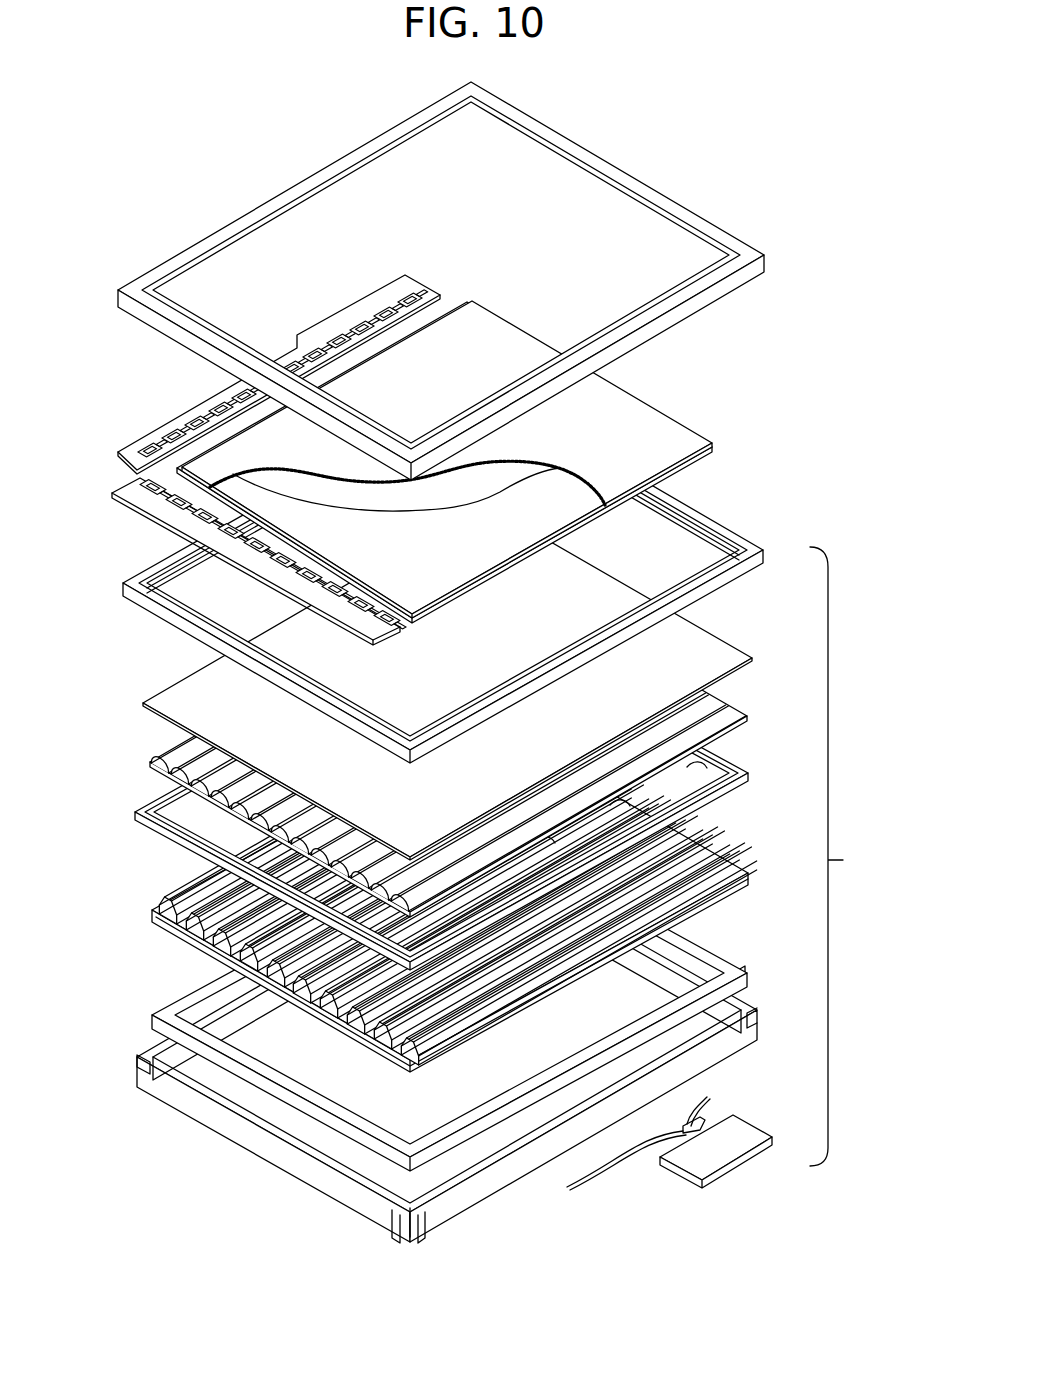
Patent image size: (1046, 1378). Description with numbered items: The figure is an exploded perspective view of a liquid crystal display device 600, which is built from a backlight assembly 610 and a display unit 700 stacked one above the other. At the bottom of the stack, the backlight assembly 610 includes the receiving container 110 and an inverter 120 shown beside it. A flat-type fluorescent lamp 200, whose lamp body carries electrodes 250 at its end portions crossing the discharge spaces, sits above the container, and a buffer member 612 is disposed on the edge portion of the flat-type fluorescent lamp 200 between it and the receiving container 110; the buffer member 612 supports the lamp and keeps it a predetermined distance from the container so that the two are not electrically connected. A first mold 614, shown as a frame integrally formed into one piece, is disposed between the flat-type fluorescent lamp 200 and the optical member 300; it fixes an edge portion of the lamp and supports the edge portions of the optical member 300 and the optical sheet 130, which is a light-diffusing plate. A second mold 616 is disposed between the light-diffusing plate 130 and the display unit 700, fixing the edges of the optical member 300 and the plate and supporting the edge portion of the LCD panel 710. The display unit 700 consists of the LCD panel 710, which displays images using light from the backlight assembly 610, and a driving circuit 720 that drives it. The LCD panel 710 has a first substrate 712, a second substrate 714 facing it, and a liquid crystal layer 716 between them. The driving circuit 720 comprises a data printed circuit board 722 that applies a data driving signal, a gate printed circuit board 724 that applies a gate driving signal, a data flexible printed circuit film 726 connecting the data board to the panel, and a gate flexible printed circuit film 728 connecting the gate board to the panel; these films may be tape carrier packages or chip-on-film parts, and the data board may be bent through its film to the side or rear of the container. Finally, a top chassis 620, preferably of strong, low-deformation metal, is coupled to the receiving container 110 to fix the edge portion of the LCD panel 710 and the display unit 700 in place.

The liquid crystal display device 600 is at (315, 139).
The top chassis 620 is at (172, 240).
The display unit 700 is at (250, 437).
The driving circuit 720 is at (250, 437).
The data printed circuit board 722 is at (313, 333).
The gate printed circuit board 724 is at (140, 500).
The data flexible printed circuit film 726 is at (368, 327).
The gate flexible printed circuit film 728 is at (178, 490).
The LCD panel 710 is at (493, 462).
The first substrate 712 is at (513, 550).
The second substrate 714 is at (627, 482).
The liquid crystal layer 716 is at (513, 482).
The second mold 616 is at (133, 626).
The optical sheet 130 is at (750, 644).
The optical member 300 is at (160, 740).
The first mold 614 is at (135, 826).
The flat-type fluorescent lamp 200 is at (416, 887).
The electrodes 250 is at (160, 912).
The buffer member 612 is at (166, 996).
The backlight assembly 610 is at (468, 777).
The receiving container 110 is at (155, 1112).
The inverter 120 is at (710, 1163).